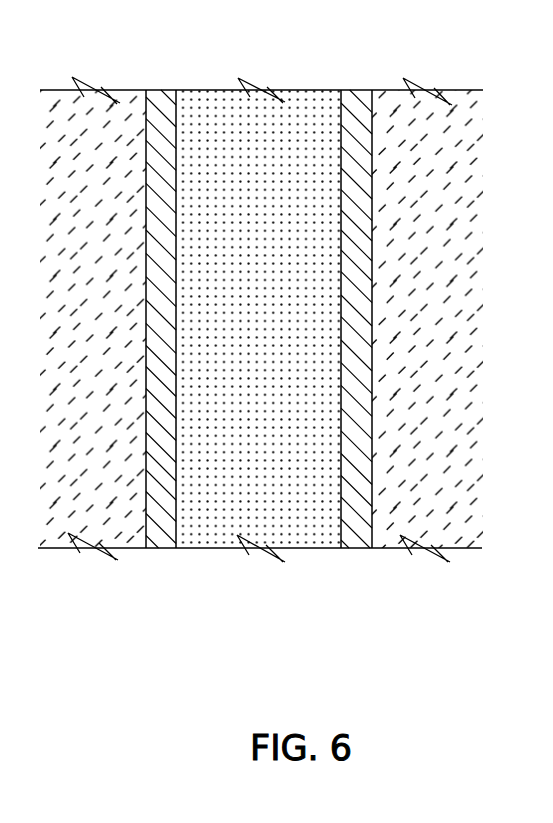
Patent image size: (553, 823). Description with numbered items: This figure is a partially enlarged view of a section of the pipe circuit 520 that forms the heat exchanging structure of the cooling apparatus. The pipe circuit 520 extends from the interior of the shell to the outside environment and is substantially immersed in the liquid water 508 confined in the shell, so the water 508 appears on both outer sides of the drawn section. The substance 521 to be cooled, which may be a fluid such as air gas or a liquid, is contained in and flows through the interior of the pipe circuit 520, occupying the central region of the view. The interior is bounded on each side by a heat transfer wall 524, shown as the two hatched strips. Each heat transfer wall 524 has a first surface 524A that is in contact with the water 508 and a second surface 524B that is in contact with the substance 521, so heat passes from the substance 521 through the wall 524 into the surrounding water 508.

The liquid water 508 is at (448, 341).
The pipe circuit 520 is at (375, 66).
The substance 521 is at (283, 339).
The heat transfer wall 524 is at (331, 376).
The first surface 524A is at (373, 493).
The second surface 524B is at (340, 513).